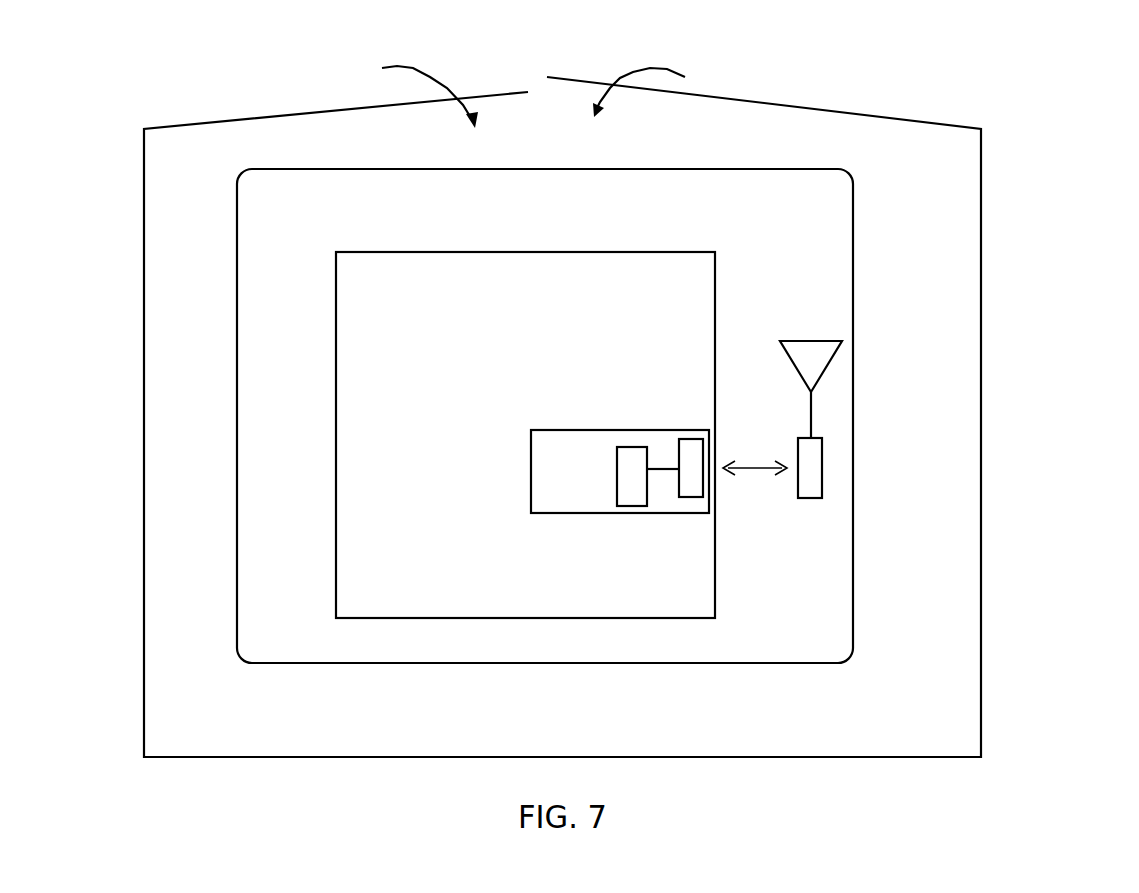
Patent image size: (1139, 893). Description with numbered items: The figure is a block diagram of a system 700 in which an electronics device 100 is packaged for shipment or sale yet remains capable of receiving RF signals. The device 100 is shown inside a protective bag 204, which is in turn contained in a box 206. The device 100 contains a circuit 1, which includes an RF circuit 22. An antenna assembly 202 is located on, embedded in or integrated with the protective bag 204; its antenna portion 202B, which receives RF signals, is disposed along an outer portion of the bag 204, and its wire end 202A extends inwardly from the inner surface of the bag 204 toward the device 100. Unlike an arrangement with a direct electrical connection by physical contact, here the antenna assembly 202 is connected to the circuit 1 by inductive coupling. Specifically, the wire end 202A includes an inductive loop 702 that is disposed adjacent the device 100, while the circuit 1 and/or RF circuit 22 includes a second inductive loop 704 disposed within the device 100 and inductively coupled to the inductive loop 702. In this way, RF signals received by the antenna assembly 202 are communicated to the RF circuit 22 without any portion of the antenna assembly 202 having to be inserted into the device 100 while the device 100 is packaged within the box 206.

The system 700 is at (1036, 59).
The box 206 is at (953, 747).
The protective bag 204 is at (816, 241).
The device 100 is at (373, 317).
The circuit 1 is at (530, 468).
The RF circuit 22 is at (617, 469).
The inductive loop 704 is at (693, 497).
The inductive loop 702 is at (814, 483).
The wire end 202A is at (814, 430).
The antenna portion 202B is at (812, 367).
The antenna assembly 202 is at (1018, 413).